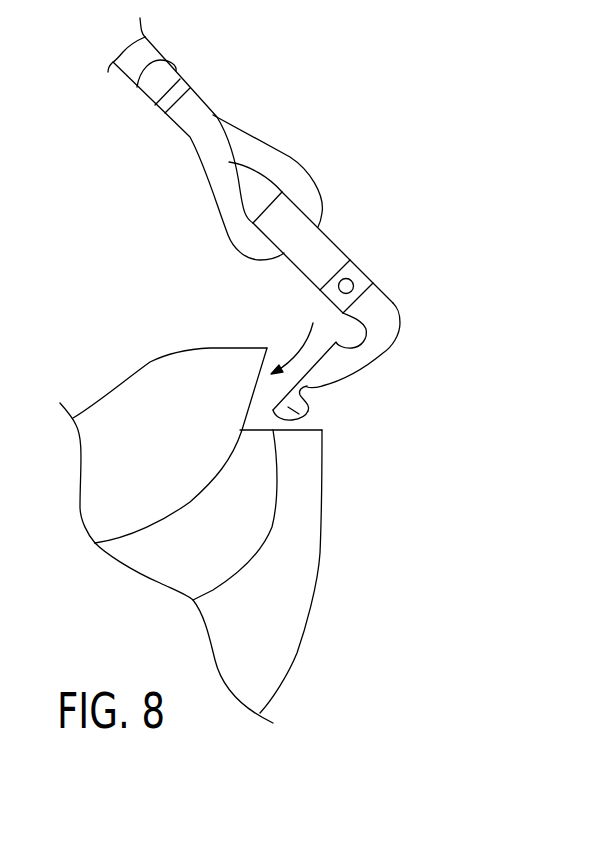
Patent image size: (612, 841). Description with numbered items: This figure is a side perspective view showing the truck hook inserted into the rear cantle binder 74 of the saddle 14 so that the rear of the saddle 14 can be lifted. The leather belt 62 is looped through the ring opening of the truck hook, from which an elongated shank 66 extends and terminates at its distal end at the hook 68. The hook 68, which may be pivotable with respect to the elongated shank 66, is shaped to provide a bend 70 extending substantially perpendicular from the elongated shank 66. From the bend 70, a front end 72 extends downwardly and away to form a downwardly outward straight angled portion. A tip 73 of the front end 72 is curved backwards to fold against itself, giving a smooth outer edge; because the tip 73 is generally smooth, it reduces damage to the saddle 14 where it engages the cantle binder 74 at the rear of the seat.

The saddle 14 is at (312, 503).
The leather belt 62 is at (283, 162).
The elongated shank 66 is at (325, 250).
The hook 68 is at (400, 336).
The bend 70 is at (388, 323).
The front end 72 is at (308, 390).
The tip 73 is at (300, 414).
The cantle binder 74 is at (233, 356).